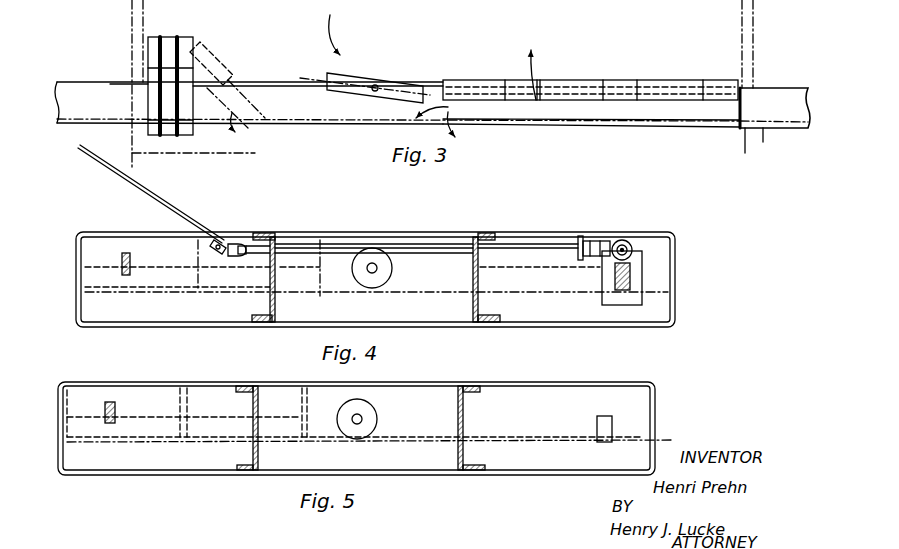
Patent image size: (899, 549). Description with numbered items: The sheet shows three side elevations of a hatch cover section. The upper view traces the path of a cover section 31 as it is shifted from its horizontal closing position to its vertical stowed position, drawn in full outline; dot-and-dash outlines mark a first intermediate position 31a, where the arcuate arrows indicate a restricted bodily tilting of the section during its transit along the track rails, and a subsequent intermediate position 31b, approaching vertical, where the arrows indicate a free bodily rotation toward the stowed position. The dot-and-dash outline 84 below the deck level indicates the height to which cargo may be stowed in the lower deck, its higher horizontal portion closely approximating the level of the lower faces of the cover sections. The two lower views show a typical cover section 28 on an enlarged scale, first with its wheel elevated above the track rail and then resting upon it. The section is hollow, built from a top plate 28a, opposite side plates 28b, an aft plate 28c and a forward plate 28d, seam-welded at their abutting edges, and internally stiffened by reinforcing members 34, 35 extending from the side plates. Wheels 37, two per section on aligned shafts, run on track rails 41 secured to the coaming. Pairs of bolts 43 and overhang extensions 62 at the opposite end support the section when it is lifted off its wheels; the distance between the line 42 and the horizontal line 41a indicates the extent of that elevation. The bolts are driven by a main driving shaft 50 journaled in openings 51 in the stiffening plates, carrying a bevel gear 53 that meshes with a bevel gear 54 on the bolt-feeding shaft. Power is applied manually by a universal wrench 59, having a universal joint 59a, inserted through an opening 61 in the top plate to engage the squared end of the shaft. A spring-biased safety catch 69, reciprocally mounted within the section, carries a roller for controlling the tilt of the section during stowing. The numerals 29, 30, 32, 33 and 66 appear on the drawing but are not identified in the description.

In FIG. 3, the cover section 28 is at (720, 128).
In FIG. 4, the cover section 28 is at (628, 323).
In FIG. 5, the cover section 28 is at (510, 477).
In FIG. 3, the top plate 28a is at (688, 93).
In FIG. 4, the top plate 28a is at (548, 230).
In FIG. 4, the side plates 28b is at (510, 270).
In FIG. 4, the aft plate 28c is at (77, 277).
In FIG. 5, the aft plate 28c is at (60, 427).
In FIG. 4, the forward plate 28d is at (675, 283).
In FIG. 3, the rail segment 29 is at (592, 95).
In FIG. 3, the rail segment 30 is at (488, 95).
In FIG. 3, the cover section 31 is at (197, 43).
In FIG. 3, the intermediate position 31a is at (397, 93).
In FIG. 3, the subsequent intermediate position 31b is at (240, 102).
In FIG. 3, the clamp bars 32 is at (168, 45).
In FIG. 3, the clamp block 33 is at (155, 54).
In FIG. 4, the reinforcing member 34 is at (278, 303).
In FIG. 5, the reinforcing member 34 is at (252, 412).
In FIG. 4, the reinforcing member 35 is at (478, 295).
In FIG. 5, the reinforcing member 35 is at (463, 420).
In FIG. 3, the wheels 37 is at (375, 92).
In FIG. 4, the wheels 37 is at (385, 267).
In FIG. 5, the wheels 37 is at (368, 417).
In FIG. 3, the track rails 41 is at (283, 83).
In FIG. 4, the horizontal line 41a is at (563, 292).
In FIG. 5, the horizontal line 41a is at (537, 437).
In FIG. 4, the line 42 is at (395, 288).
In FIG. 4, the bolts 43 is at (632, 275).
In FIG. 5, the bolts 43 is at (610, 423).
In FIG. 4, the main driving shaft 50 is at (293, 248).
In FIG. 4, the openings 51 is at (273, 245).
In FIG. 4, the bevel gear 53 is at (612, 238).
In FIG. 4, the bevel gear 54 is at (630, 238).
In FIG. 4, the universal wrench 59 is at (140, 193).
In FIG. 4, the universal joint 59a is at (240, 243).
In FIG. 4, the opening 61 is at (222, 238).
In FIG. 5, the overhang extensions 62 is at (210, 400).
In FIG. 3, the direction of movement 66 is at (432, 74).
In FIG. 4, the safety catch 69 is at (125, 253).
In FIG. 5, the safety catch 69 is at (110, 397).
In FIG. 3, the dot-and-dash outline 84 is at (253, 153).